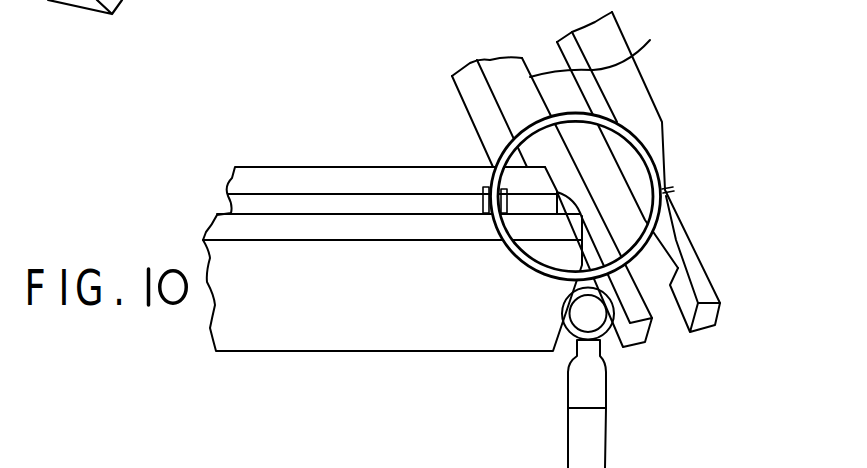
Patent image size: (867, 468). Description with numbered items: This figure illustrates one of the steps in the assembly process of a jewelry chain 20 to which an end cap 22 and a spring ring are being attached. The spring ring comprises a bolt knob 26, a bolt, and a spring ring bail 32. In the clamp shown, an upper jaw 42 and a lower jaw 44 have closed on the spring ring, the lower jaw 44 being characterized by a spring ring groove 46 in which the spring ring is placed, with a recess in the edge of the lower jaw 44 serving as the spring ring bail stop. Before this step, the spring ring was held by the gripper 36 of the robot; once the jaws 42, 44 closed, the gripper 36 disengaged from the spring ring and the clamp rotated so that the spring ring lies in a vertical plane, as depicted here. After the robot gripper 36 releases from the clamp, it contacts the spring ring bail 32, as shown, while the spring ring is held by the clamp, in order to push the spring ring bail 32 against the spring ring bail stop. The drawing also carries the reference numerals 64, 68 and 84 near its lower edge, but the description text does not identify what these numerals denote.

The jewelry chain 20 is at (608, 453).
The end cap 22 is at (600, 393).
The bolt knob 26 is at (676, 182).
The spring ring bail 32 is at (609, 346).
The gripper 36 is at (636, 66).
The upper jaw 42 is at (405, 334).
The lower jaw 44 is at (283, 167).
The spring ring groove 46 is at (484, 188).
The element 64 is at (190, 463).
The element 68 is at (352, 463).
The element 84 is at (263, 467).